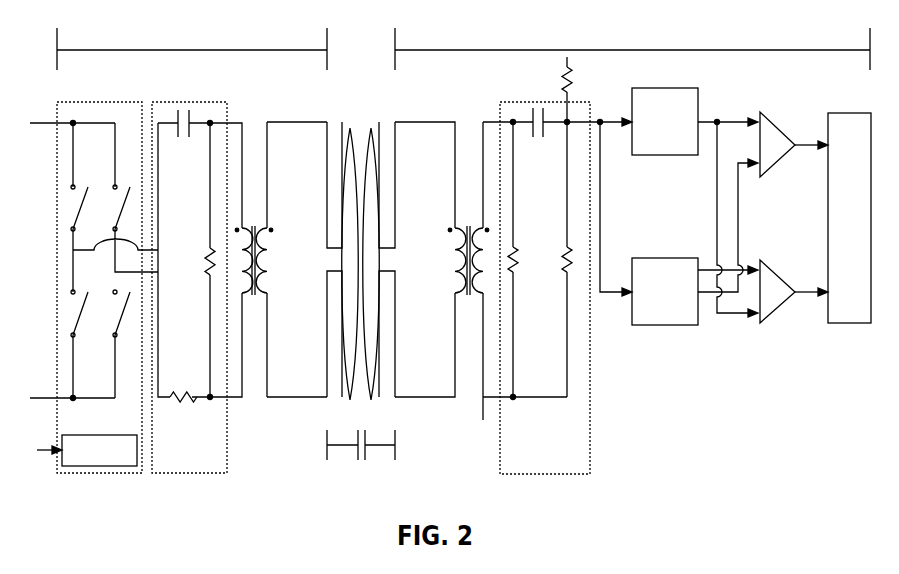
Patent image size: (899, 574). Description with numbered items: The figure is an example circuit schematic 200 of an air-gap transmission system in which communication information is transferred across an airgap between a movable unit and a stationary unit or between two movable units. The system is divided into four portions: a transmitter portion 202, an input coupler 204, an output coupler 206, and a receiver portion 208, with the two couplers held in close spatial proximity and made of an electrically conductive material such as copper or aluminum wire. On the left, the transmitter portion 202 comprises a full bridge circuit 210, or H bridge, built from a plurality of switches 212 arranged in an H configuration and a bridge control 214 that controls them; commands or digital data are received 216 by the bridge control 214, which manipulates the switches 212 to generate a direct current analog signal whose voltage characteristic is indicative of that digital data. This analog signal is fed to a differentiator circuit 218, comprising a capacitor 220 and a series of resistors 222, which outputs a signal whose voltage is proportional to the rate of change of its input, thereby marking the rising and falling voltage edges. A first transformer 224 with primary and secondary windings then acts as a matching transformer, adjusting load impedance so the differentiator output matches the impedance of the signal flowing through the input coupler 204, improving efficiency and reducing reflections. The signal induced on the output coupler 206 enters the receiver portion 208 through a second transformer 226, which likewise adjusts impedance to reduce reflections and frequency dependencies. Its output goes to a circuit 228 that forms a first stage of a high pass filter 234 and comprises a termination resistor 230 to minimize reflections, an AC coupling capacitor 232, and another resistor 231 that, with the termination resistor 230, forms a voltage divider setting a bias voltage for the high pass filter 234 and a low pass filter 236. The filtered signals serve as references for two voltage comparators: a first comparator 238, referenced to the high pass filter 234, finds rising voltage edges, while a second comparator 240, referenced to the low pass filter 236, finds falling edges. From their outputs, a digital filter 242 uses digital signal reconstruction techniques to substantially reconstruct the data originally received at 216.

The circuit schematic 200 is at (733, 482).
The transmitter portion 202 is at (173, 50).
The input coupler 204 is at (338, 448).
The output coupler 206 is at (385, 448).
The receiver portion 208 is at (653, 50).
The full bridge circuit 210 is at (100, 102).
The switches 212 is at (122, 303).
The bridge control 214 is at (90, 435).
The received digital data 216 is at (47, 450).
The differentiator circuit 218 is at (188, 102).
The capacitor 220 is at (191, 119).
The resistors 222 is at (206, 256).
The first transformer 224 is at (261, 215).
The second transformer 226 is at (462, 213).
The circuit 228 is at (498, 102).
The termination resistor 230 is at (516, 268).
The resistor 231 is at (566, 251).
The AC coupling capacitor 232 is at (543, 108).
The high pass filter 234 is at (657, 87).
The low pass filter 236 is at (660, 257).
The first comparator 238 is at (777, 127).
The second comparator 240 is at (777, 274).
The digital filter 242 is at (848, 324).